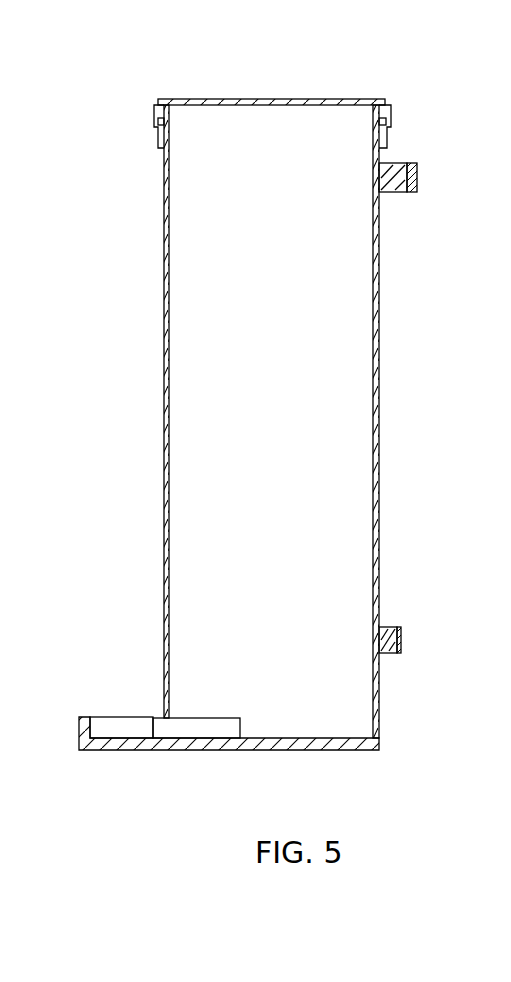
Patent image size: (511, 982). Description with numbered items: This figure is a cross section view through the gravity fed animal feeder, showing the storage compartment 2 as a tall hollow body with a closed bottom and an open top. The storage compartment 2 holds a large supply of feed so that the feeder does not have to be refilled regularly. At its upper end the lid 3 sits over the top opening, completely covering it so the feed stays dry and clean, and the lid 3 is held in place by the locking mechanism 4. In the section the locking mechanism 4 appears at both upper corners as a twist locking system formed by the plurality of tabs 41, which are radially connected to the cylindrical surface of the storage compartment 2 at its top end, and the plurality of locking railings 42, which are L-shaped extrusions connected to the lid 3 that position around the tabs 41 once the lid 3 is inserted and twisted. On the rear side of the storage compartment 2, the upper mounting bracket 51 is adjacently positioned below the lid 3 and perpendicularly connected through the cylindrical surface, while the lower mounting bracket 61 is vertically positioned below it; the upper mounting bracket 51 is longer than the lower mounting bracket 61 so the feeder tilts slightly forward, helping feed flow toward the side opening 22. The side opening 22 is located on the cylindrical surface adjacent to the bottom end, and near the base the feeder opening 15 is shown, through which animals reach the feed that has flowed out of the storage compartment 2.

The storage compartment 2 is at (164, 470).
The lid 3 is at (230, 101).
The locking mechanism 4 is at (272, 131).
The plurality of tabs 41 is at (163, 122).
The plurality of locking railings 42 is at (157, 122).
The upper mounting bracket 51 is at (404, 179).
The lower mounting bracket 61 is at (386, 637).
The feeder opening 15 is at (108, 725).
The side opening 22 is at (180, 727).